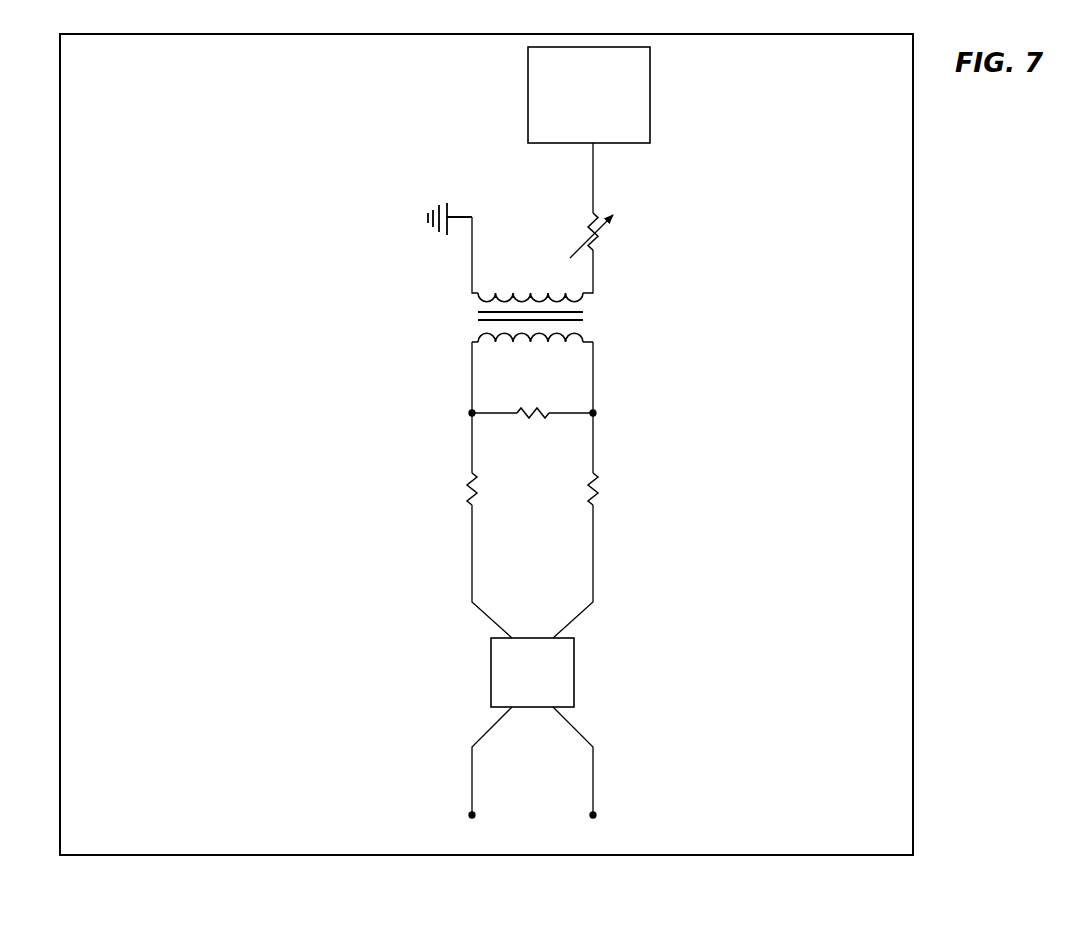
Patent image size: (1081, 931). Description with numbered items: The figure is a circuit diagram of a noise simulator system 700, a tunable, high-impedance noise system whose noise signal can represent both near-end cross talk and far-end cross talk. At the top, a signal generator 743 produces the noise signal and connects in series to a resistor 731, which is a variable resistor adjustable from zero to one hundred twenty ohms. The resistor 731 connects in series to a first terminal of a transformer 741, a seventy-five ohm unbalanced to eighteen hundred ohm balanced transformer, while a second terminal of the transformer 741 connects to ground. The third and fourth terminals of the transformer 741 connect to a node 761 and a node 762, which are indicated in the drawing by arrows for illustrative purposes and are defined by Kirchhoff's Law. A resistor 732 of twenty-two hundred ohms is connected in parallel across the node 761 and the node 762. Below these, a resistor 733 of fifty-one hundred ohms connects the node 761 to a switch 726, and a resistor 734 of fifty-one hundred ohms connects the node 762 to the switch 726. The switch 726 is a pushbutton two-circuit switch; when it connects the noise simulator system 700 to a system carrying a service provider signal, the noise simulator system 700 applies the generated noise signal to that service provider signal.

The noise simulator system 700 is at (355, 848).
The signal generator 743 is at (606, 131).
The resistor 731 is at (597, 238).
The transformer 741 is at (468, 315).
The node 762 is at (458, 417).
The node 761 is at (609, 402).
The resistor 732 is at (532, 407).
The resistor 734 is at (480, 487).
The resistor 733 is at (603, 483).
The switch 726 is at (549, 696).